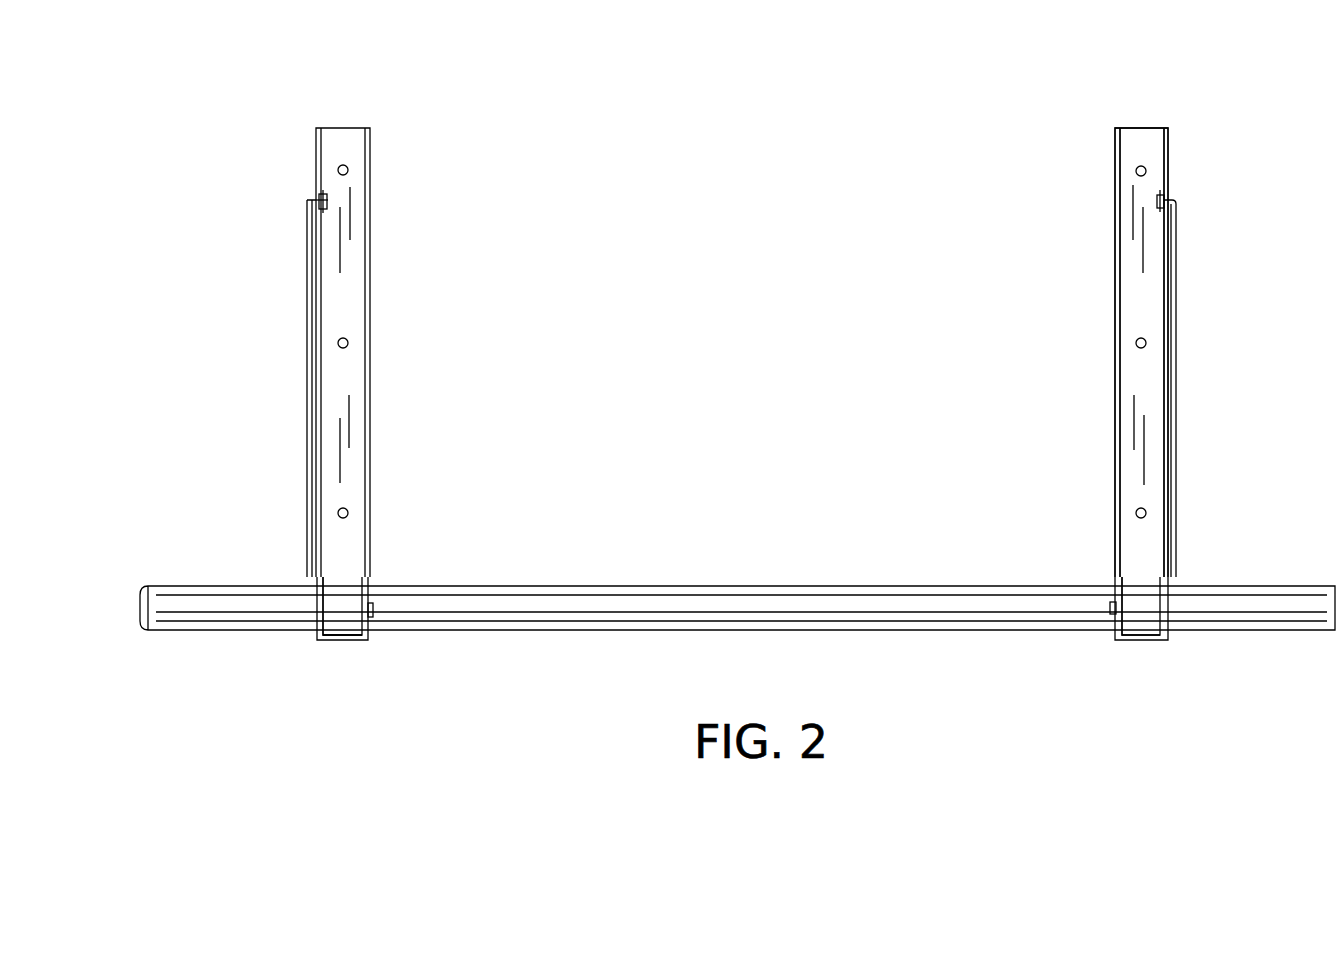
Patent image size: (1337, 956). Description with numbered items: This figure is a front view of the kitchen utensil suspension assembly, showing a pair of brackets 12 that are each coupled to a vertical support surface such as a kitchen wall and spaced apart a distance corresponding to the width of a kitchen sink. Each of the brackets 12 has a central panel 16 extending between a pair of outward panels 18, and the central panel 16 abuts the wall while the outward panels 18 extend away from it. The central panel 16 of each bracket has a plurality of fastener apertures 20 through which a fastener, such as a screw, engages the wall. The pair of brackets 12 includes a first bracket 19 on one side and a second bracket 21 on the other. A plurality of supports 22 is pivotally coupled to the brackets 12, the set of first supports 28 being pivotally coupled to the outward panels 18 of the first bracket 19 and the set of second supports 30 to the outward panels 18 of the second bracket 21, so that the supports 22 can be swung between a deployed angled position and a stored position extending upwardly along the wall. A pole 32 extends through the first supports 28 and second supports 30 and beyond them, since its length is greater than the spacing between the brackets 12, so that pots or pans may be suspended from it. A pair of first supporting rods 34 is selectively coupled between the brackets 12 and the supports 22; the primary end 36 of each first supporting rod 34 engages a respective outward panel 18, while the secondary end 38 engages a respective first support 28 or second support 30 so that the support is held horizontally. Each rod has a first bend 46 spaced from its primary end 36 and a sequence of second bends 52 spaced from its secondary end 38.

The bracket 12 is at (317, 128).
The central panel 16 is at (350, 228).
The outward panel 18 is at (302, 201).
The first bracket 19 is at (727, 385).
The fastener aperture 20 is at (343, 165).
The second bracket 21 is at (1138, 381).
The support 22 is at (363, 610).
The first support 28 is at (348, 562).
The second support 30 is at (1150, 562).
The pole 32 is at (684, 595).
The first supporting rod 34 is at (307, 427).
The primary end 36 is at (328, 200).
The secondary end 38 is at (333, 610).
The first bend 46 is at (1166, 199).
The second bends 52 is at (310, 578).